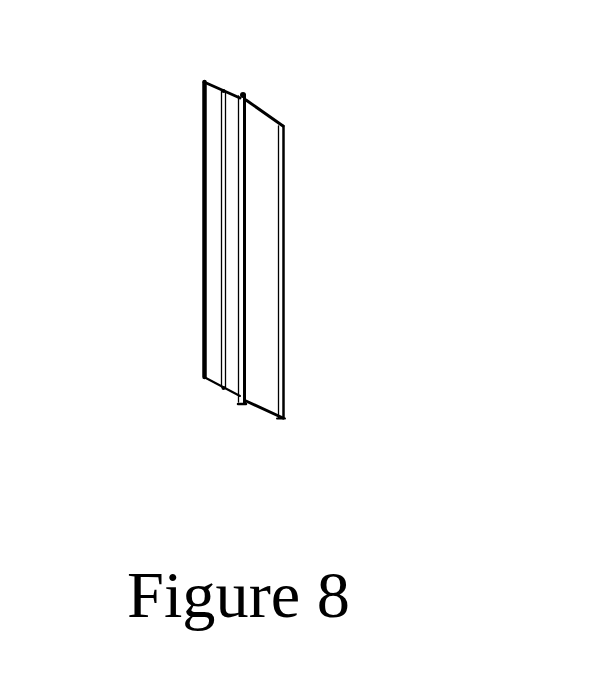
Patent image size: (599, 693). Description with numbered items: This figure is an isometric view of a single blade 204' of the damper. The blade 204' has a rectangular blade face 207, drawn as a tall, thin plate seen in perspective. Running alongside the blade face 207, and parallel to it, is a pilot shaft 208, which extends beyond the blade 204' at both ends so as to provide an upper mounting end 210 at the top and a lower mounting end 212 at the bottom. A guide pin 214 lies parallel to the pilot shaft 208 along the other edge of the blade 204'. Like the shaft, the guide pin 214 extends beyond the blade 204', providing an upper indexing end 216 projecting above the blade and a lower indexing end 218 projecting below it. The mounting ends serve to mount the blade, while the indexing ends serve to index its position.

The blade 204' is at (223, 253).
The blade face 207 is at (262, 324).
The pilot shaft 208 is at (252, 240).
The upper mounting end 210 is at (248, 94).
The lower mounting end 212 is at (242, 404).
The guide pin 214 is at (220, 203).
The upper indexing end 216 is at (224, 90).
The lower indexing end 218 is at (222, 388).